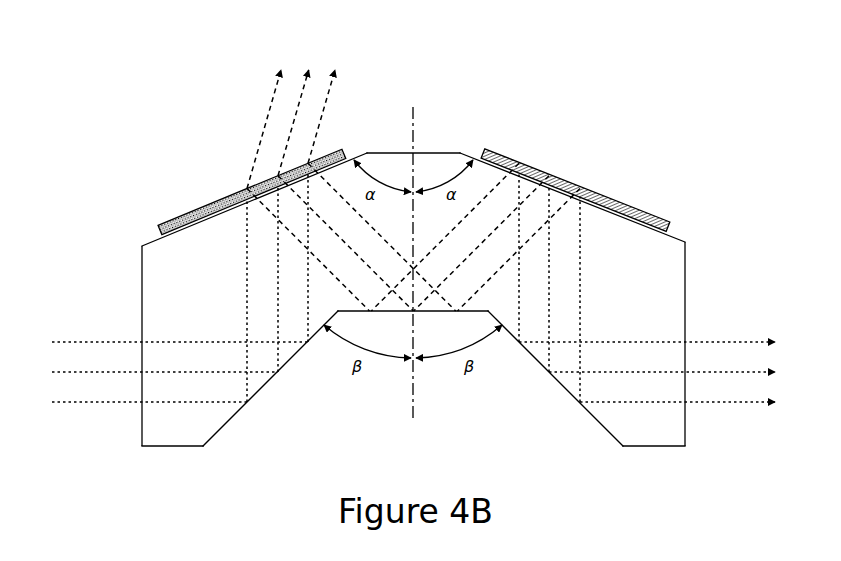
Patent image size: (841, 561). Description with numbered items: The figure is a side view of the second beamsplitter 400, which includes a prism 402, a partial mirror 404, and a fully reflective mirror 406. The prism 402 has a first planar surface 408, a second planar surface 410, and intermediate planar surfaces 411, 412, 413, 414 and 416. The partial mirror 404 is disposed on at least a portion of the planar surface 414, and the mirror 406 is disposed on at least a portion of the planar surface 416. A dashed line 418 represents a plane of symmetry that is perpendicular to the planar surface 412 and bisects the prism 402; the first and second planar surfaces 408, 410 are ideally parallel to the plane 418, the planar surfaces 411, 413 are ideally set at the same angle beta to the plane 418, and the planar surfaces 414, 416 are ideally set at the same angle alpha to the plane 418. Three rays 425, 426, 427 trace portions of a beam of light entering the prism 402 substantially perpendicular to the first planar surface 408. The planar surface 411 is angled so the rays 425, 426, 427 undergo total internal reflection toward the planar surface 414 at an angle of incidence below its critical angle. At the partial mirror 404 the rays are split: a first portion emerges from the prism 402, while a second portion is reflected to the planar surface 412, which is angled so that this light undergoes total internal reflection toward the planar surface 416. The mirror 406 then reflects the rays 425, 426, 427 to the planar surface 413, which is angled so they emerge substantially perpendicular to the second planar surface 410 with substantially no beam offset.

The second beamsplitter 400 is at (619, 78).
The prism 402 is at (460, 152).
The partial mirror 404 is at (198, 206).
The fully reflective mirror 406 is at (585, 188).
The first planar surface 408 is at (142, 437).
The second planar surface 410 is at (686, 436).
The planar surface 411 is at (265, 386).
The planar surface 412 is at (377, 312).
The planar surface 413 is at (562, 386).
The planar surface 414 is at (149, 241).
The planar surface 416 is at (677, 238).
The plane-of-symmetry 418 is at (420, 418).
The ray 425 is at (115, 341).
The ray 426 is at (115, 371).
The ray 427 is at (115, 401).